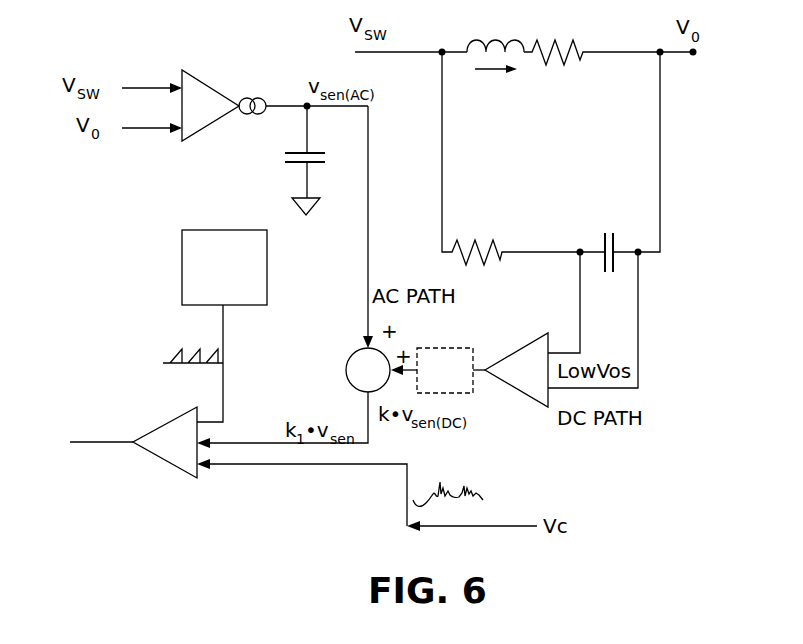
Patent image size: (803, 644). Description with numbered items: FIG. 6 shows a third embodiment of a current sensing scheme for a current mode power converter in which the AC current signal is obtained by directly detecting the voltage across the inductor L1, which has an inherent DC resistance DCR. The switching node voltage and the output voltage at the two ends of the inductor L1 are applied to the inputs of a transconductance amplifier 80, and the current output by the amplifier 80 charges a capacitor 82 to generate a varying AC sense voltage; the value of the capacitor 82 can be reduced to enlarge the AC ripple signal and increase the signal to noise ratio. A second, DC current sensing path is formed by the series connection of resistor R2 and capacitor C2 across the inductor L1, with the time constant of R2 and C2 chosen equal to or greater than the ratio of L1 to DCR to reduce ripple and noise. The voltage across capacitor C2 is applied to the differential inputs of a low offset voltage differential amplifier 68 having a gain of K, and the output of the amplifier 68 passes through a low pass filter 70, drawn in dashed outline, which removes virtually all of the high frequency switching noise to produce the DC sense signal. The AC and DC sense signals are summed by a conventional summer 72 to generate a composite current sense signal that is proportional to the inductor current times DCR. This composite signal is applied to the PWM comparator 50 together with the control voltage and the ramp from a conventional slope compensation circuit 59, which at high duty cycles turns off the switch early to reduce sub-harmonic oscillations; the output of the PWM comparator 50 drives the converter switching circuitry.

The PWM comparator 50 is at (176, 469).
The slope compensation circuit 59 is at (182, 272).
The differential amplifier 68 is at (528, 395).
The low pass filter 70 is at (457, 347).
The summer 72 is at (346, 370).
The transconductance amplifier 80 is at (209, 80).
The capacitor 82 is at (285, 157).
The inductor L1 is at (439, 57).
The DC resistance of the inductor DCR is at (610, 40).
The resistor R2 is at (523, 158).
The capacitor C2 is at (607, 167).